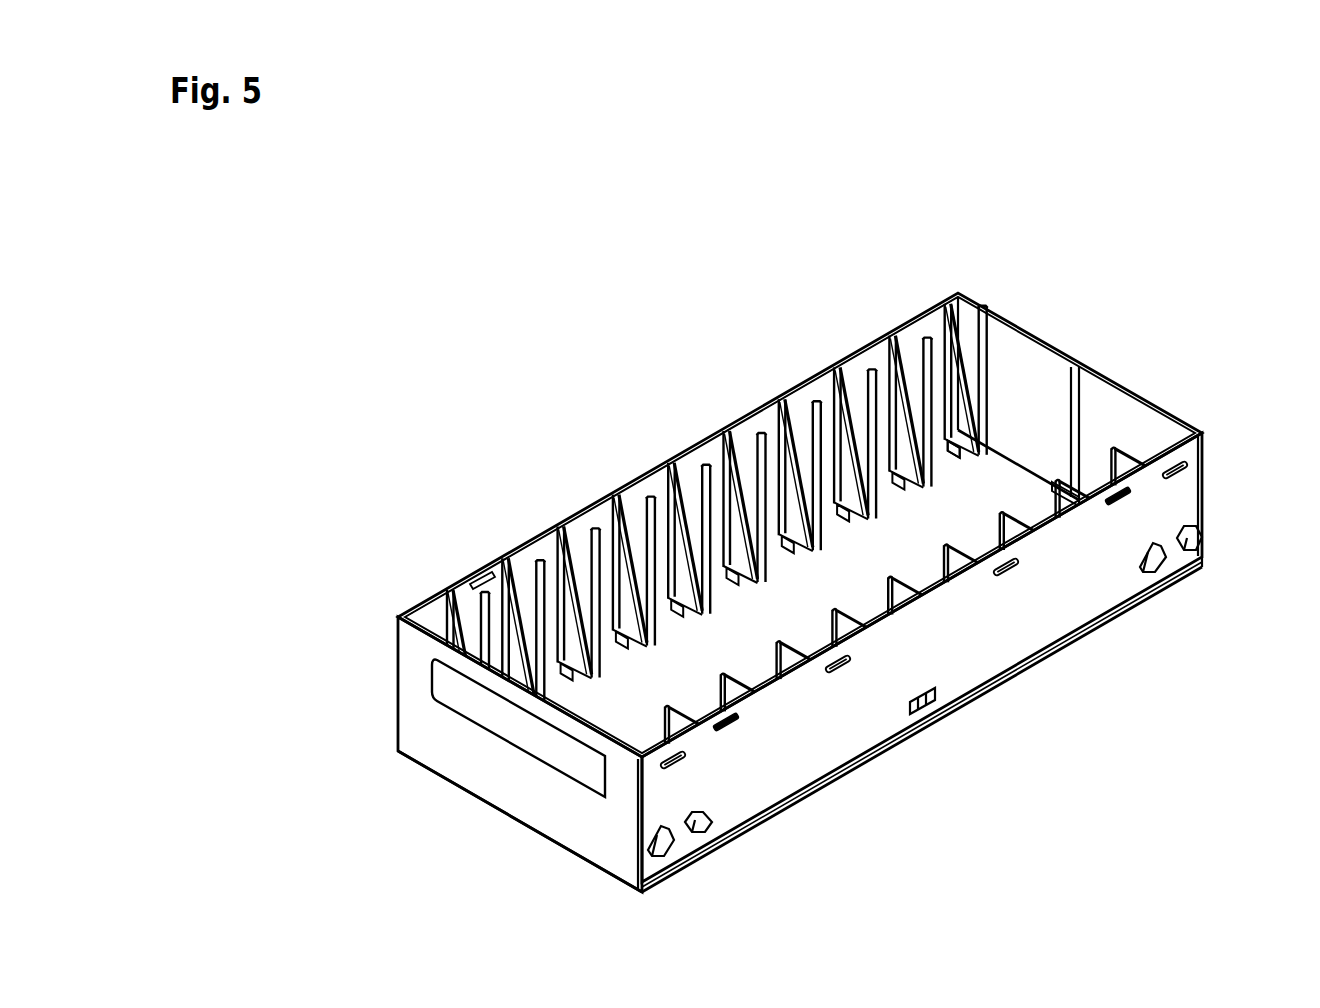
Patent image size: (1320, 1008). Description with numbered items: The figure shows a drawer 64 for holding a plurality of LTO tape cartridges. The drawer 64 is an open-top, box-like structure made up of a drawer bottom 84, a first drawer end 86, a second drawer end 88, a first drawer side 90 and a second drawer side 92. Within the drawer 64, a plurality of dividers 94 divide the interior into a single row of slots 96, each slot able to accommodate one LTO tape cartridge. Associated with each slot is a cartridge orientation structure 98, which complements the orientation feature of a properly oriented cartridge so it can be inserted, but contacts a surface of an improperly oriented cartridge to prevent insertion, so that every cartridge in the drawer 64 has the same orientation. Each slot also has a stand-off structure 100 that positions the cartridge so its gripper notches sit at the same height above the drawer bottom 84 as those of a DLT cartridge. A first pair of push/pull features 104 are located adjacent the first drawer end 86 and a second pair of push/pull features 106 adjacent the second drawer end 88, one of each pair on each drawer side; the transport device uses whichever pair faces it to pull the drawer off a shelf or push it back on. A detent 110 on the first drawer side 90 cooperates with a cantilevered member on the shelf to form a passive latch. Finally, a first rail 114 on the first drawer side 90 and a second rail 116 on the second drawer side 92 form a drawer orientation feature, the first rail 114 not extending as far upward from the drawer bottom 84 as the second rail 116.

The drawer 64 is at (840, 330).
The drawer bottom 84 is at (1130, 455).
The first drawer end 86 is at (523, 797).
The second drawer end 88 is at (965, 458).
The first drawer side 90 is at (432, 599).
The second drawer side 92 is at (1047, 620).
The dividers 94 is at (934, 322).
The slots 96 is at (930, 315).
The cartridge orientation structure 98 is at (977, 399).
The stand-off structure 100 is at (1005, 457).
The first pair of push/pull features 104 is at (730, 810).
The second pair of push/pull features 106 is at (1190, 505).
The detent 110 is at (932, 699).
The first rail 114 is at (396, 750).
The second rail 116 is at (690, 873).